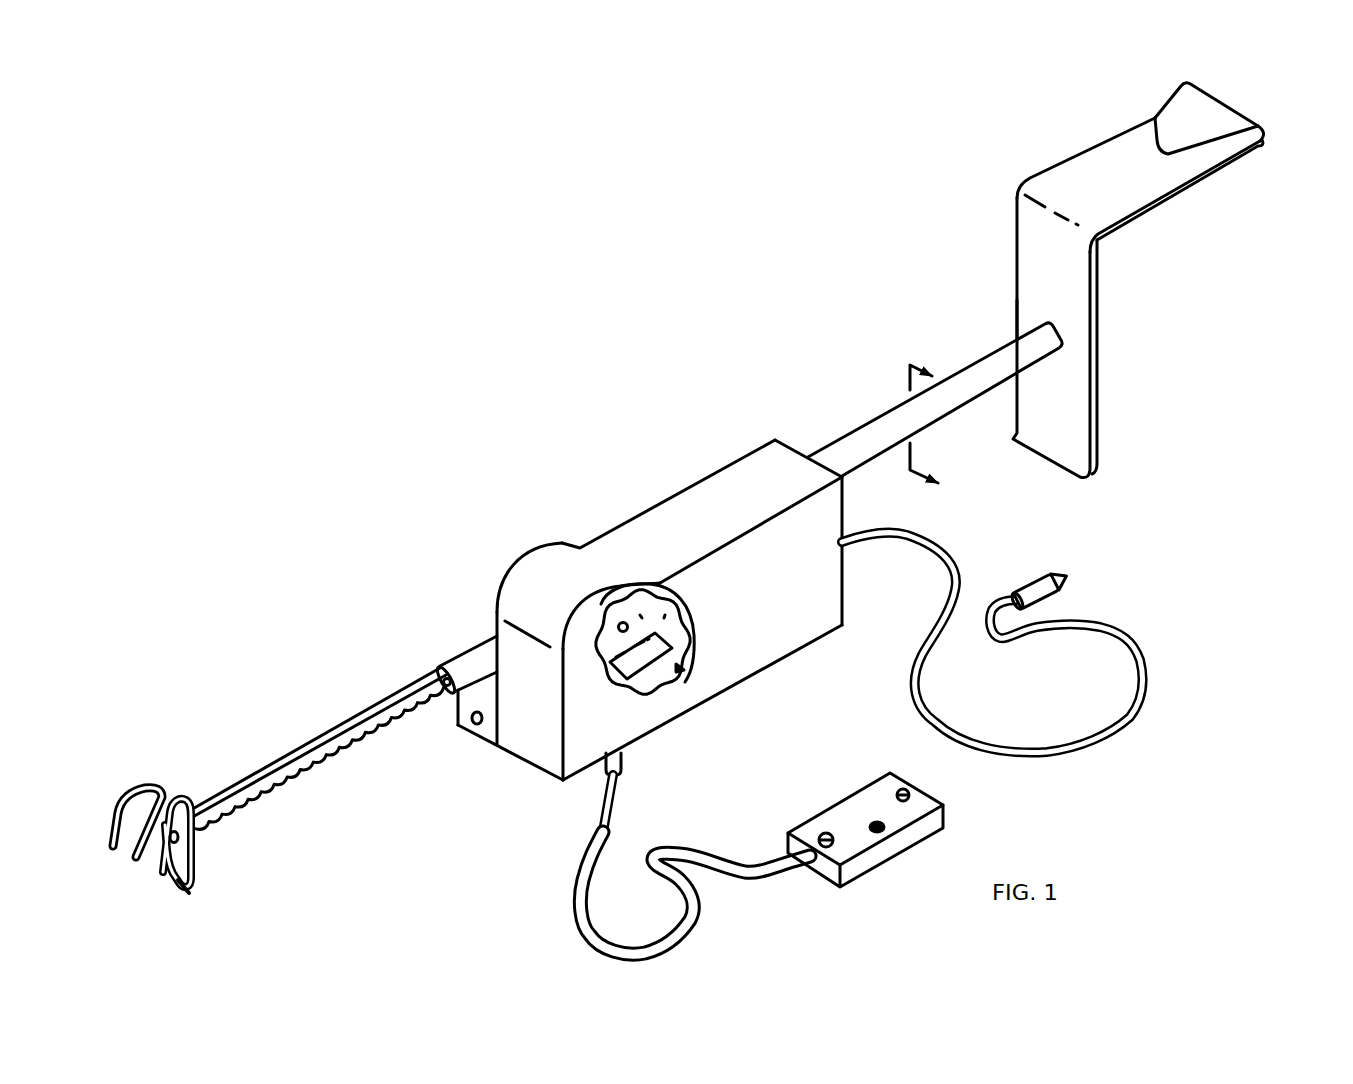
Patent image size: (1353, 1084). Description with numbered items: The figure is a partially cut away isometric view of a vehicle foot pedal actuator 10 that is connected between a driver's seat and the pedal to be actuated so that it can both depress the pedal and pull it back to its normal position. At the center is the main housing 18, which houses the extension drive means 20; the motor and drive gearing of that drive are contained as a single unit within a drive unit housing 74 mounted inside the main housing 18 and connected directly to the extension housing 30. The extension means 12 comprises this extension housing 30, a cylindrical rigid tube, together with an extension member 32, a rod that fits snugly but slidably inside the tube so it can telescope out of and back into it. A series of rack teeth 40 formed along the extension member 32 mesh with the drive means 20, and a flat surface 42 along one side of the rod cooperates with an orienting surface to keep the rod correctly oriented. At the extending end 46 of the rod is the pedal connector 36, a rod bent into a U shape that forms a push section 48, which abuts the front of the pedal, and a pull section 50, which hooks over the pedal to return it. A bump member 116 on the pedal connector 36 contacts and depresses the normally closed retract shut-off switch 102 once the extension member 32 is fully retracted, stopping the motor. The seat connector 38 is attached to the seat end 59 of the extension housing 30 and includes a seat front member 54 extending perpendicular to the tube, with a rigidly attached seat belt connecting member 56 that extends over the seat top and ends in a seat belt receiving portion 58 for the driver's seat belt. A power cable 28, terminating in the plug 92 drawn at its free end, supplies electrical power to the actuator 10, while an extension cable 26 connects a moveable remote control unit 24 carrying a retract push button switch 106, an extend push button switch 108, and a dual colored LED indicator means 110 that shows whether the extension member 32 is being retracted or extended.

The foot pedal actuator 10 is at (560, 422).
The extension means 12 is at (405, 640).
The main housing 18 is at (779, 638).
The extension drive means 20 is at (685, 670).
The remote control unit 24 is at (848, 813).
The extension cable 26 is at (577, 873).
The power cable 28 is at (932, 702).
The extension housing 30 is at (461, 661).
The extension member 32 is at (242, 790).
The pedal connector 36 is at (123, 783).
The seat connector 38 is at (960, 238).
The rack teeth 40 is at (312, 776).
The flat surface 42 is at (367, 740).
The extending end 46 is at (180, 840).
The push section 48 is at (167, 873).
The pull section 50 is at (113, 830).
The seat front member 54 is at (1072, 389).
The seat belt connecting member 56 is at (1138, 185).
The seat belt receiving portion 58 is at (1193, 118).
The seat end 59 is at (987, 312).
The drive unit housing 74 is at (665, 615).
The plug 92 is at (1045, 593).
The retract shut-off switch 102 is at (474, 727).
The retract push button switch 106 is at (819, 835).
The extend push button switch 108 is at (904, 788).
The indicator means 110 is at (883, 828).
The bump member 116 is at (193, 895).